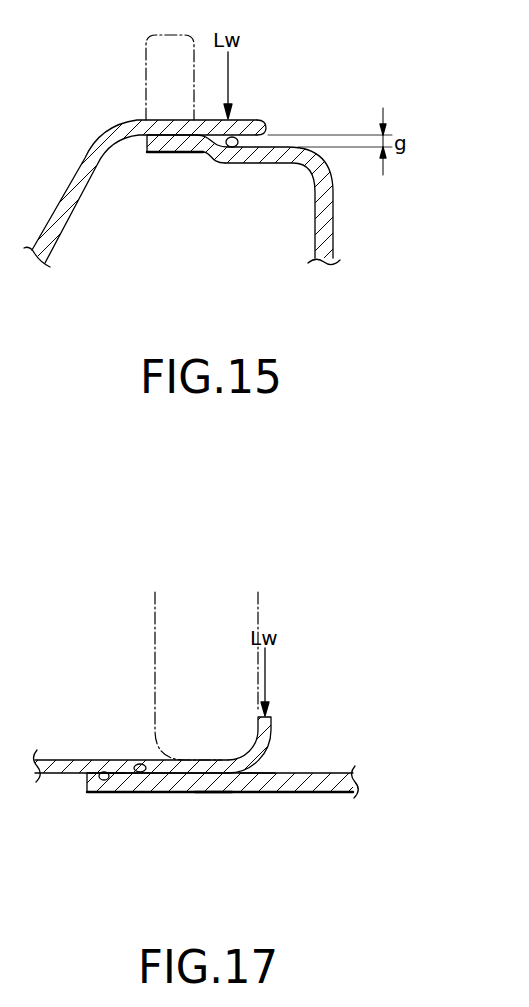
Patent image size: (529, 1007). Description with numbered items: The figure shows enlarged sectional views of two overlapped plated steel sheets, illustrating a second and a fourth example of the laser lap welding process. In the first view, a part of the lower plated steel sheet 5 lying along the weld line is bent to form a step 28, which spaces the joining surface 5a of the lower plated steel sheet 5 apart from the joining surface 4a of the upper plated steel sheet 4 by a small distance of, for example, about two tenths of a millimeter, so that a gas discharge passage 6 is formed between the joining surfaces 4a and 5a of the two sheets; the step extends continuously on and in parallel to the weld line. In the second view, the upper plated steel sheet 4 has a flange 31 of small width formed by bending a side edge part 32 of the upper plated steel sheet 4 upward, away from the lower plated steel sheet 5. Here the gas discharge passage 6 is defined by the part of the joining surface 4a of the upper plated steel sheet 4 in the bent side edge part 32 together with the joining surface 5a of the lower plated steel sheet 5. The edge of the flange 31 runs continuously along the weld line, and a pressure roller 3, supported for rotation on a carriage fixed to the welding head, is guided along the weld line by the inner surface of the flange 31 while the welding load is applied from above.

In FIG. 15, the pressure roller 3 is at (146, 80).
In FIG. 17, the pressure roller 3 is at (155, 610).
In FIG. 15, the upper plated steel sheet 4 is at (73, 184).
In FIG. 17, the upper plated steel sheet 4 is at (55, 775).
In FIG. 15, the joining surface of the upper plated steel sheet 4a is at (257, 128).
In FIG. 17, the joining surface of the upper plated steel sheet 4a is at (106, 775).
In FIG. 15, the lower plated steel sheet 5 is at (332, 230).
In FIG. 17, the lower plated steel sheet 5 is at (313, 794).
In FIG. 15, the joining surface of the lower plated steel sheet 5a is at (230, 162).
In FIG. 17, the joining surface of the lower plated steel sheet 5a is at (148, 776).
In FIG. 15, the gas discharge passage 6 is at (254, 166).
In FIG. 17, the gas discharge passage 6 is at (252, 776).
In FIG. 15, the step 28 is at (207, 154).
In FIG. 17, the flange 31 is at (268, 742).
In FIG. 17, the side edge part 32 is at (213, 796).